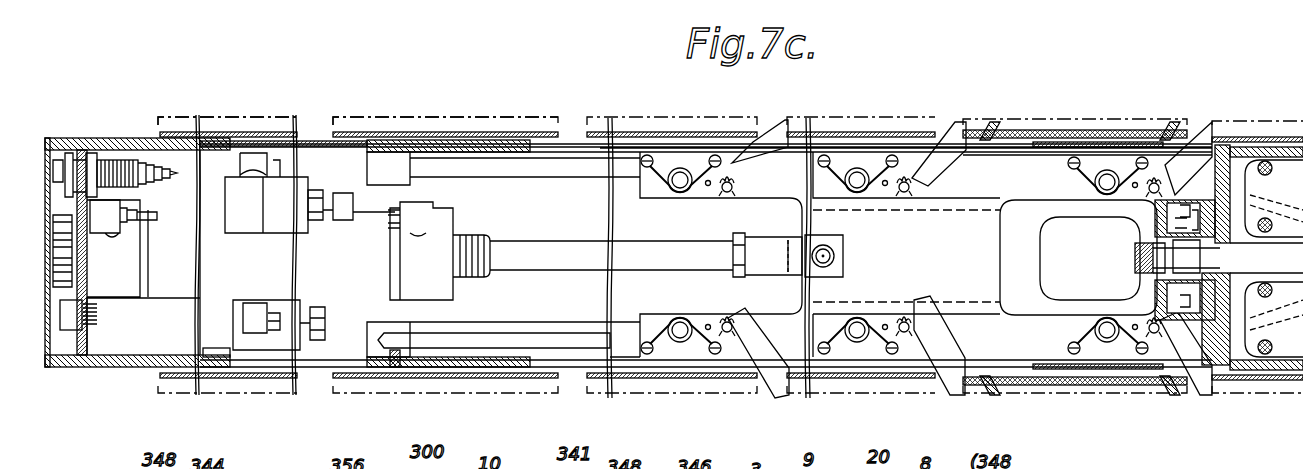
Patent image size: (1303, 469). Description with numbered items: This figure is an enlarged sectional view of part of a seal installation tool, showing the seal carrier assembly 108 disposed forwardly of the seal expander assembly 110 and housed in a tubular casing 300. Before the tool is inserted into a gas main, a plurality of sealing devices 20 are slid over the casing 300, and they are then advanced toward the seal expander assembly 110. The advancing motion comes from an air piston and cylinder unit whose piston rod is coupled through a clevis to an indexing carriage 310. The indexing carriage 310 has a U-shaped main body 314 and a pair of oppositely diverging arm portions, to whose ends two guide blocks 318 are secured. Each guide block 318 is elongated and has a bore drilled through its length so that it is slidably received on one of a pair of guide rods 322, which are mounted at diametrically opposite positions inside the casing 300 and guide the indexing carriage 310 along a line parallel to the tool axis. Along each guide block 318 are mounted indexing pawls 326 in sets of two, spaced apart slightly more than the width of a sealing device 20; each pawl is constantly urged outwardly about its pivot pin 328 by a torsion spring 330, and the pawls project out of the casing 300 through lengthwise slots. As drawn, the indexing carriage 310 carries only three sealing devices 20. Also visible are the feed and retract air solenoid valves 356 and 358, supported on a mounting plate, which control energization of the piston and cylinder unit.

The sealing device 20 is at (240, 390).
The seal carrier assembly 108 is at (492, 108).
The seal expander assembly 110 is at (1265, 110).
The tubular casing 300 is at (138, 367).
The indexing carriage 310 is at (967, 233).
The U-shaped main body 314 is at (977, 362).
The guide block 318 is at (1030, 167).
The guide rod 322 is at (520, 167).
The indexing pawl 326 is at (762, 142).
The pivot pin 328 is at (728, 192).
The torsion spring 330 is at (840, 160).
The feed air solenoid valve 356 is at (285, 193).
The retract air solenoid valve 358 is at (125, 343).